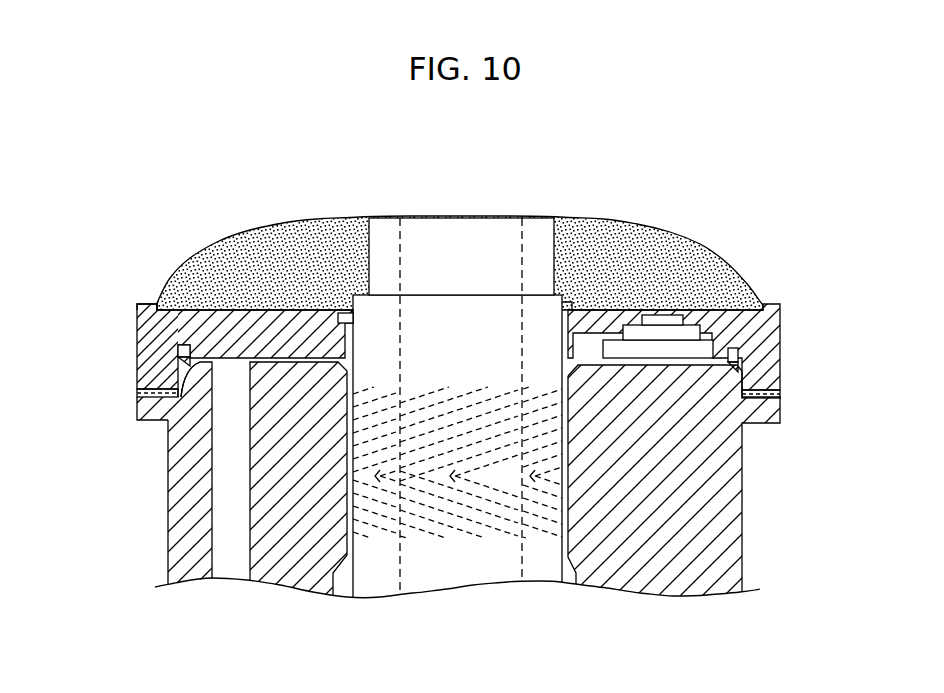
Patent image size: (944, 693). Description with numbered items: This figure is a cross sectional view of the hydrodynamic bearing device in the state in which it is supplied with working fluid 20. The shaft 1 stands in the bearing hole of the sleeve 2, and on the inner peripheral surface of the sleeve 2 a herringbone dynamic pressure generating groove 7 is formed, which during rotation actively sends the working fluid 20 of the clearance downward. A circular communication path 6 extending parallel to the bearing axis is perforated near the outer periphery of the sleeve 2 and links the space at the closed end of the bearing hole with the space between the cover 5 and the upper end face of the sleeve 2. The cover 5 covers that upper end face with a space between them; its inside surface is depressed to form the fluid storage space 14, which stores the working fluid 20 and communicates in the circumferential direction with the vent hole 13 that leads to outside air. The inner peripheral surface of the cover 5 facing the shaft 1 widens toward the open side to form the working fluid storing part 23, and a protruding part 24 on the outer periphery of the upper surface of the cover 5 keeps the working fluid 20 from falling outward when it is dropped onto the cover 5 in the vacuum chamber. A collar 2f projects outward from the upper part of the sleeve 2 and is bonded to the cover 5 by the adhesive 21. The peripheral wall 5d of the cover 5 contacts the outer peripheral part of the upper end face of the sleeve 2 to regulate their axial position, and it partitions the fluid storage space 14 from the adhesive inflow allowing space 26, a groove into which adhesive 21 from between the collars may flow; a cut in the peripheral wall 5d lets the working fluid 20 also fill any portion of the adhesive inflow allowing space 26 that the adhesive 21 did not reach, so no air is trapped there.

The shaft 1 is at (422, 232).
The sleeve 2 is at (727, 496).
The collar 2f is at (137, 404).
The cover 5 is at (146, 332).
The peripheral wall 5d is at (181, 397).
The circular communication path 6 is at (213, 532).
The dynamic pressure generating groove 7 is at (433, 540).
The vent hole 13 is at (660, 316).
The fluid storage space 14 is at (703, 350).
The working fluid 20 is at (660, 232).
The adhesive 21 is at (137, 392).
The working fluid storing part 23 is at (572, 305).
The protruding part 24 is at (145, 302).
The adhesive inflow allowing space 26 is at (184, 345).